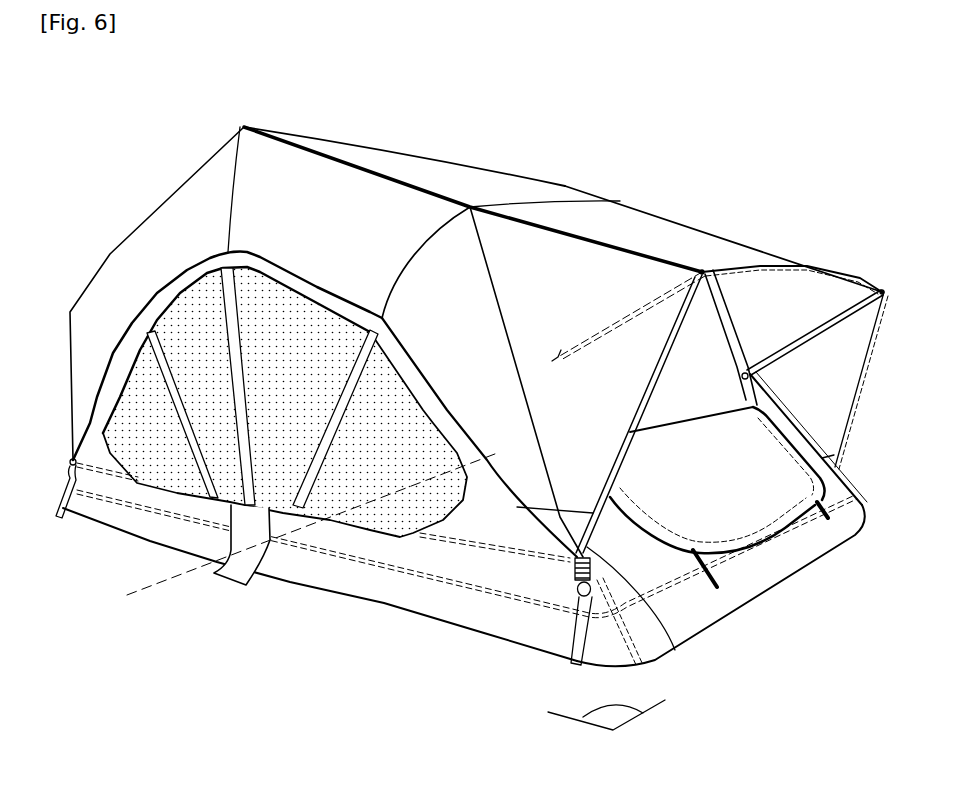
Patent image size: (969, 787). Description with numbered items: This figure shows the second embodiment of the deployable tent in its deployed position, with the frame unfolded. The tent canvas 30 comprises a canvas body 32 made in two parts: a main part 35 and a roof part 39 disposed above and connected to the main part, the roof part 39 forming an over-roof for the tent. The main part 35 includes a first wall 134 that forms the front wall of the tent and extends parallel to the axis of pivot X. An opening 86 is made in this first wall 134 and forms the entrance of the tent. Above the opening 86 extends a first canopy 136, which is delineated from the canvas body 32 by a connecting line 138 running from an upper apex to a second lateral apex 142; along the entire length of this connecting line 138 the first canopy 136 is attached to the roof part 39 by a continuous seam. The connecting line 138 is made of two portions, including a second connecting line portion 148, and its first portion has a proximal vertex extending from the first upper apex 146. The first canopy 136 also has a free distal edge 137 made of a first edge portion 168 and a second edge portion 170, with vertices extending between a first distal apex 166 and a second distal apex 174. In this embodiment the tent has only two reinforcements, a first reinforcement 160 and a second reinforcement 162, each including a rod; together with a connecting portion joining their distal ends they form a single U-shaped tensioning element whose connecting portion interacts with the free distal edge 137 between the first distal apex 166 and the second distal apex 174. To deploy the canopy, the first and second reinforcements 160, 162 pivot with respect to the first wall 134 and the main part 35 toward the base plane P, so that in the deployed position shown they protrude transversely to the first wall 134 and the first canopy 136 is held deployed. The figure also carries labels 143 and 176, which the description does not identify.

The tent canvas 30 is at (180, 227).
The canvas body 32 is at (275, 177).
The main part 35 is at (348, 563).
The roof part 39 is at (357, 192).
The opening 86 is at (700, 357).
The first wall 134 is at (670, 572).
The first canopy 136 is at (743, 243).
The free distal edge 137 is at (653, 382).
The connecting line 138 is at (553, 202).
The second lateral apex 142 is at (603, 550).
The floor 143 is at (662, 622).
The first upper apex 146 is at (480, 200).
The second connecting line portion 148 is at (517, 377).
The first reinforcement 160 is at (630, 312).
The second reinforcement 162 is at (817, 333).
The first distal apex 166 is at (703, 263).
The first edge portion 168 is at (807, 267).
The second edge portion 170 is at (627, 460).
The second distal apex 174 is at (882, 288).
The edge seam 176 is at (757, 380).
The axis of pivot X is at (313, 536).
The base plane P is at (606, 702).